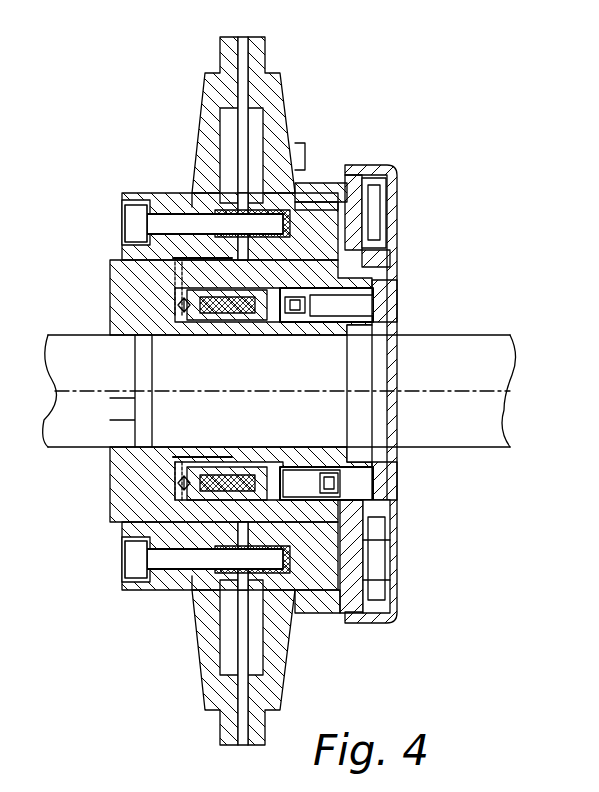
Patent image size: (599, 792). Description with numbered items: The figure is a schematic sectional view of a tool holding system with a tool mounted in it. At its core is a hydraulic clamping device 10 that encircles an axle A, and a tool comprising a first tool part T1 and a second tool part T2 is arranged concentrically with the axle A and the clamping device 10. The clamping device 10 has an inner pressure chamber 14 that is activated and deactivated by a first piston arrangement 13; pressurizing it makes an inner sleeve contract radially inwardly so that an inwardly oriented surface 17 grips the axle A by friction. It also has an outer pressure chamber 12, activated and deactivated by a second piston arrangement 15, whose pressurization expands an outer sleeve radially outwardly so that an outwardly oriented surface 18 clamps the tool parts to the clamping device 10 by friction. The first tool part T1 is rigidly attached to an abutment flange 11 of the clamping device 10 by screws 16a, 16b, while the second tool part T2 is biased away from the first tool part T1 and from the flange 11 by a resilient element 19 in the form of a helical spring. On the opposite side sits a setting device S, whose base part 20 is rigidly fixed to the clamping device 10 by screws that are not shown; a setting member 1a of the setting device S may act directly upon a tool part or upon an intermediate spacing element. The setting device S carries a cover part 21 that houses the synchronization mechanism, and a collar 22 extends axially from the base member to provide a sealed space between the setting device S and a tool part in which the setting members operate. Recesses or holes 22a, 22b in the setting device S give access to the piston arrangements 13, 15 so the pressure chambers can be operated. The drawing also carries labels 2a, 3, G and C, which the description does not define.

The first tool part T1 is at (197, 130).
The second tool part T2 is at (287, 77).
The setting device S is at (384, 135).
The setting member 1a is at (352, 187).
The cover 2a is at (398, 177).
The cover part 21 is at (400, 210).
The gap G is at (340, 205).
The cover hub part 3 is at (398, 258).
The recess 22a is at (400, 303).
The axle A is at (513, 350).
The inwardly oriented surface 17 is at (327, 343).
The centerline C is at (403, 391).
The recess 22b is at (400, 480).
The outwardly oriented surface 18 is at (372, 522).
The base part 20 is at (397, 574).
The collar 22 is at (322, 602).
The resilient element 19 is at (295, 192).
The abutment flange 11 is at (140, 193).
The screw 16a is at (123, 224).
The clamping device 10 is at (112, 263).
The outer pressure chamber 12 is at (175, 275).
The first piston arrangement 13 is at (205, 337).
The inner pressure chamber 14 is at (173, 460).
The second piston arrangement 15 is at (172, 540).
The screw 16b is at (122, 565).